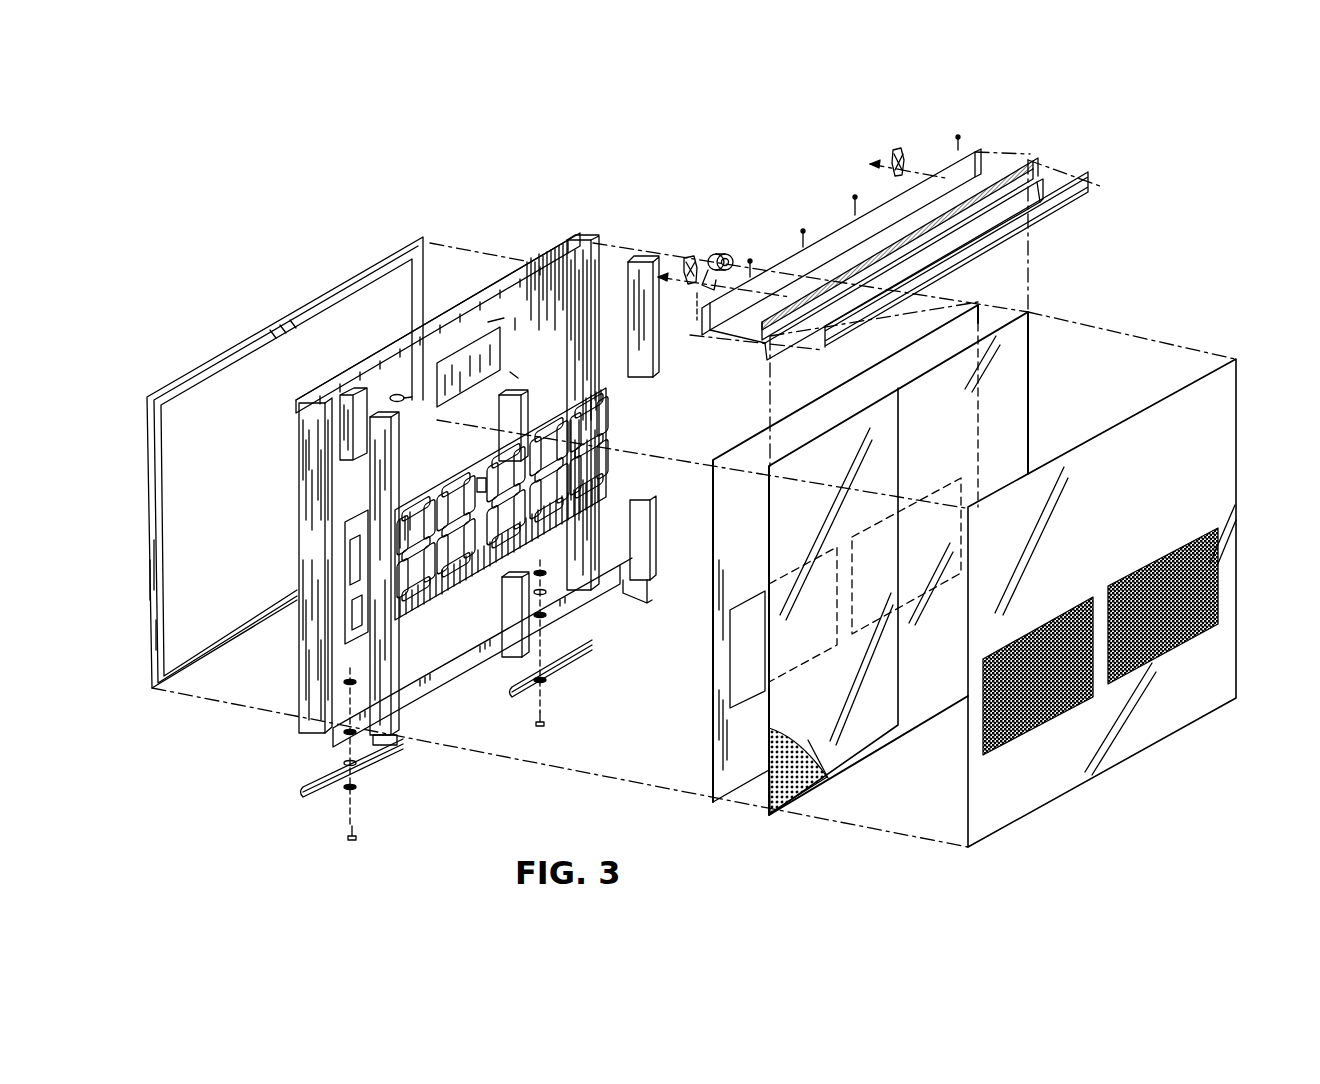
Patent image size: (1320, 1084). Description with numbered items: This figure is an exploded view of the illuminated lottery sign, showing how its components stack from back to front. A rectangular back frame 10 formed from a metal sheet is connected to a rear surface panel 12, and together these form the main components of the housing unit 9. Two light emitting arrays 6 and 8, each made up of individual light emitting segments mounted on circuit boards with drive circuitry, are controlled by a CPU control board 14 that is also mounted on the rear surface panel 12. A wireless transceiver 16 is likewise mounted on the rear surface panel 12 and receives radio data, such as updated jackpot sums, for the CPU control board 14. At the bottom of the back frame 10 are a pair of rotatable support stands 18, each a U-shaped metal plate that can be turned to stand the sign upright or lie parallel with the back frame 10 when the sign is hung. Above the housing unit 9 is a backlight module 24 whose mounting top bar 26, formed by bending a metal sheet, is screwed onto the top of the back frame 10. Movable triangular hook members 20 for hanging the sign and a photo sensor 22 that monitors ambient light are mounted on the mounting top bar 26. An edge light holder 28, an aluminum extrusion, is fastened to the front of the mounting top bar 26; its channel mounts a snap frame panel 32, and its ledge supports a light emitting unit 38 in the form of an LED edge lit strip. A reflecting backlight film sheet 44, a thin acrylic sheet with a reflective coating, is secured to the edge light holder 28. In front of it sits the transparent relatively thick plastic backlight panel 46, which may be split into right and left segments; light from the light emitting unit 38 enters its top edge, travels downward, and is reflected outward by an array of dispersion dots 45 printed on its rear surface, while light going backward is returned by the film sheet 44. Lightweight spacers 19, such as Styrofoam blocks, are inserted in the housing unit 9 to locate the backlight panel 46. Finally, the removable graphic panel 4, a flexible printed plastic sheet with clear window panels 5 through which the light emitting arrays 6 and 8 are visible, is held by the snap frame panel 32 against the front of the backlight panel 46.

The graphic panel 4 is at (1238, 380).
The clear plastic panels 5 is at (1190, 622).
The light emitting array 6 is at (430, 487).
The light emitting array 8 is at (544, 412).
The housing unit 9 is at (593, 218).
The back frame 10 is at (300, 638).
The rear surface panel 12 is at (560, 262).
The CPU control board 14 is at (460, 345).
The wireless transceiver 16 is at (340, 447).
The rotatable support stands 18 is at (380, 760).
The lightweight spacers 19 is at (508, 432).
The movable triangular hook members 20 is at (689, 265).
The photo sensor 22 is at (718, 256).
The backlight module 24 is at (1063, 137).
The mounting top bar 26 is at (830, 236).
The edge light holder 28 is at (1012, 170).
The snap frame panel 32 is at (312, 292).
The light emitting unit 38 is at (1030, 190).
The backlight film sheet 44 is at (730, 773).
The dispersion dots 45 is at (783, 795).
The backlight panel 46 is at (808, 792).